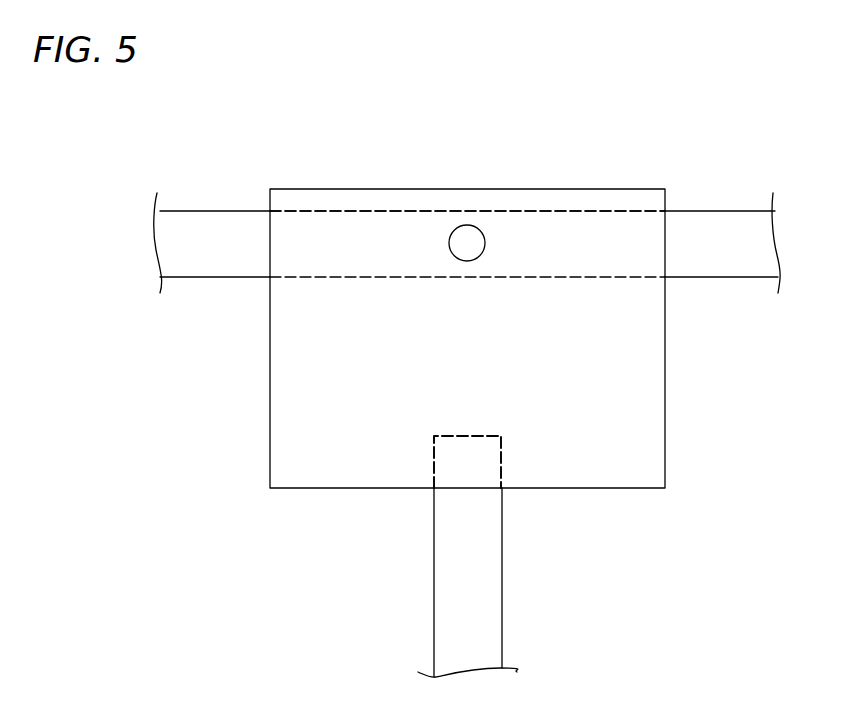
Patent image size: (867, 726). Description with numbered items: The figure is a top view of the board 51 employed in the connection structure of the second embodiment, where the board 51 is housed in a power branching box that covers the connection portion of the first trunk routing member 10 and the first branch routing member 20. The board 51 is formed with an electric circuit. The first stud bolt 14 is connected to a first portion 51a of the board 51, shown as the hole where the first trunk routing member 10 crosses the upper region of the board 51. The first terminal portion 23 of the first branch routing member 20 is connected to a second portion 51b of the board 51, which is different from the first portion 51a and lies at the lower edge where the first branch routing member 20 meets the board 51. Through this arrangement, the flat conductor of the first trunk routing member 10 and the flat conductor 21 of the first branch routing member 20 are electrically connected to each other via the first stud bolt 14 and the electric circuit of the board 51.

The first trunk routing member 10 is at (713, 210).
The board 51 is at (617, 189).
The first portion 51a is at (438, 243).
The first stud bolt 14 is at (455, 225).
The second portion 51b is at (447, 469).
The first terminal portion 23 is at (477, 463).
The flat conductor 21 is at (467, 462).
The first branch routing member 20 is at (503, 612).